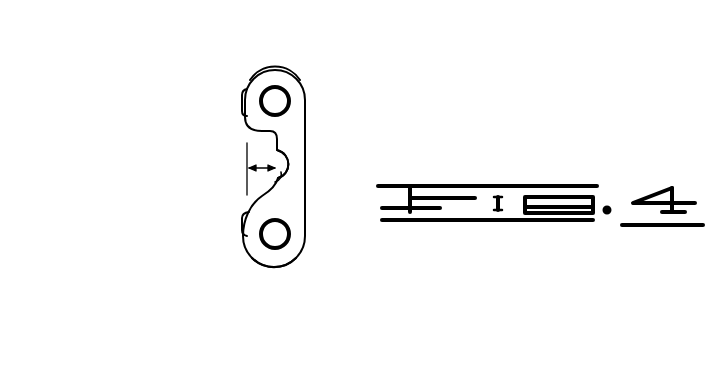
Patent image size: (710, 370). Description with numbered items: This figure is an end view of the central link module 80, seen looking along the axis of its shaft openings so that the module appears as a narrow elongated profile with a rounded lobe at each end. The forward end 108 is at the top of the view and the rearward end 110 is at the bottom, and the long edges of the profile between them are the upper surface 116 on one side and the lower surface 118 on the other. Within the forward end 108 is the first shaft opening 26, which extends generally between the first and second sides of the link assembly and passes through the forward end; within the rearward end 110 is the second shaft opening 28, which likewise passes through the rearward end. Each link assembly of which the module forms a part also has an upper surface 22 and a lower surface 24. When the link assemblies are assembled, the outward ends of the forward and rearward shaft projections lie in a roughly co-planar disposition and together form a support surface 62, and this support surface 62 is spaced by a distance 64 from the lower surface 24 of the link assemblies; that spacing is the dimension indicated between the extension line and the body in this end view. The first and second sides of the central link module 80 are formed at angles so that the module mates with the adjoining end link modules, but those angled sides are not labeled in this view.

The upper surface 22 is at (305, 205).
The lower surface 24 is at (281, 176).
The first shaft opening 26 is at (278, 88).
The second shaft opening 28 is at (274, 242).
The support surface 62 is at (240, 225).
The distance 64 is at (252, 166).
The central link module 80 is at (241, 90).
The forward end 108 is at (266, 68).
The rearward end 110 is at (262, 264).
The upper surface 116 is at (306, 150).
The lower surface 118 is at (273, 190).